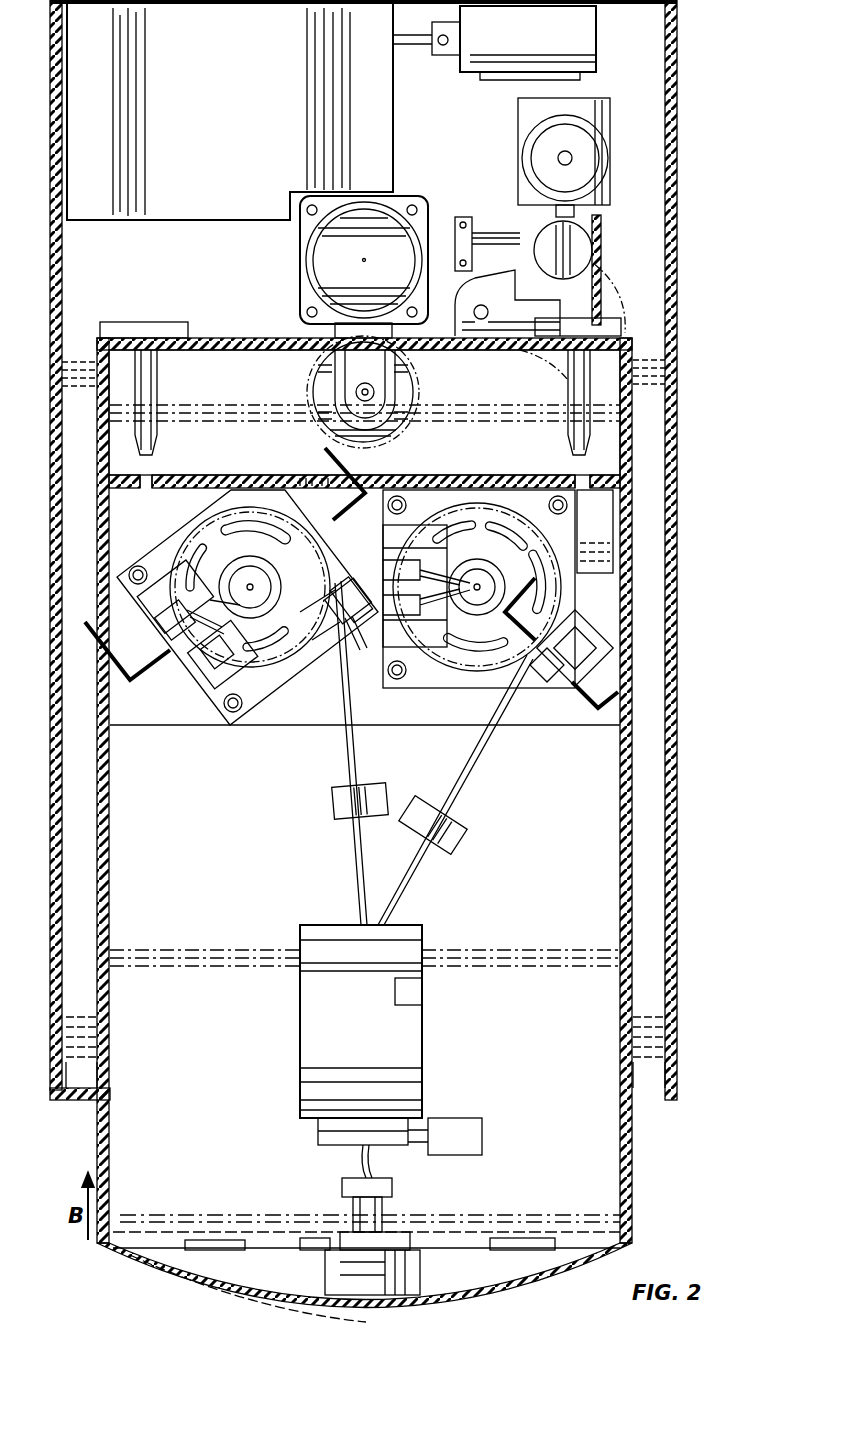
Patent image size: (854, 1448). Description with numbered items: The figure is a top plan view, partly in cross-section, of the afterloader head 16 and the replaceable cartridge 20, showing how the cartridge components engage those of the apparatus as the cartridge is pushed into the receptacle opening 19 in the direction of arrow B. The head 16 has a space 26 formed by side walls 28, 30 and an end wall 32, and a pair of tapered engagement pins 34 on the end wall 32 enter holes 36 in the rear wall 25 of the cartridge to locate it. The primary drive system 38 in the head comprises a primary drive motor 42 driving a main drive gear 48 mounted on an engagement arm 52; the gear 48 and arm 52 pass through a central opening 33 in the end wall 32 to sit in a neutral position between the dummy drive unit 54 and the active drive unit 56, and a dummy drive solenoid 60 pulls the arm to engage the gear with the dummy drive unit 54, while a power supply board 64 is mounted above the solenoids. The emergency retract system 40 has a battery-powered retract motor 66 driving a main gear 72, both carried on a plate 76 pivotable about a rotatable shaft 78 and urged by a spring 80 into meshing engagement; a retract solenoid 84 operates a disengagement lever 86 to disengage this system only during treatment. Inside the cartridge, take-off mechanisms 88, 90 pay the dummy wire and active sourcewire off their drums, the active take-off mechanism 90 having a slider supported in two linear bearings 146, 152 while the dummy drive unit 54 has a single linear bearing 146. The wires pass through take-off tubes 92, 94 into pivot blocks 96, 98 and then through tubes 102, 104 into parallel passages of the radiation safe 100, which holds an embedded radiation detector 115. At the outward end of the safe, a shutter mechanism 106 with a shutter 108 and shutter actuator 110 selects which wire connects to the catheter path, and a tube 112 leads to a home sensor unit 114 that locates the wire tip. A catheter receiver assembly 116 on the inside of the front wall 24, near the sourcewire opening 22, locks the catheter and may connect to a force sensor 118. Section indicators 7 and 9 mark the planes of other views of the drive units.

The head 16 is at (700, 283).
The receptacle opening 19 is at (108, 1100).
The replaceable cartridge 20 is at (635, 1152).
The sourcewire opening 22 is at (362, 1310).
The front wall 24 is at (152, 1265).
The rear wall 25 is at (245, 488).
The space 26 is at (430, 430).
The side wall 28 is at (95, 380).
The side wall 30 is at (655, 384).
The end wall 32 is at (232, 338).
The central opening 33 is at (425, 488).
The tapered engagement pins 34 is at (150, 388).
The holes 36 is at (147, 478).
The primary drive system 38 is at (245, 250).
The emergency retract system 40 is at (628, 190).
The primary drive motor 42 is at (383, 232).
The main drive gear 48 is at (400, 397).
The engagement arm 52 is at (345, 373).
The dummy drive unit 54 is at (195, 727).
The active drive unit 56 is at (590, 525).
The dummy drive solenoid 60 is at (533, 48).
The power supply board 64 is at (228, 127).
The retract motor 66 is at (576, 245).
The main gear 72 is at (612, 280).
The plate 76 is at (615, 326).
The rotatable shaft 78 is at (484, 310).
The spring 80 is at (500, 238).
The retract solenoid 84 is at (520, 150).
The disengagement lever 86 is at (588, 212).
The take-off mechanism 88 is at (327, 680).
The take-off mechanism 90 is at (565, 712).
The take-off tube 92 is at (350, 745).
The take-off tube 94 is at (482, 740).
The pivot block 96 is at (338, 800).
The pivot block 98 is at (458, 834).
The radiation safe 100 is at (400, 1046).
The tube 102 is at (358, 895).
The tube 104 is at (385, 895).
The shutter mechanism 106 is at (278, 1140).
The shutter 108 is at (330, 1142).
The shutter actuator 110 is at (472, 1130).
The tube 112 is at (378, 1183).
The home sensor unit 114 is at (345, 1192).
The radiation detector 115 is at (410, 996).
The catheter receiver assembly 116 is at (408, 1286).
The force sensor 118 is at (442, 1246).
The linear bearing 146 is at (362, 640).
The linear bearing 152 is at (610, 660).
The section line 7 is at (225, 577).
The section line 9 is at (579, 640).